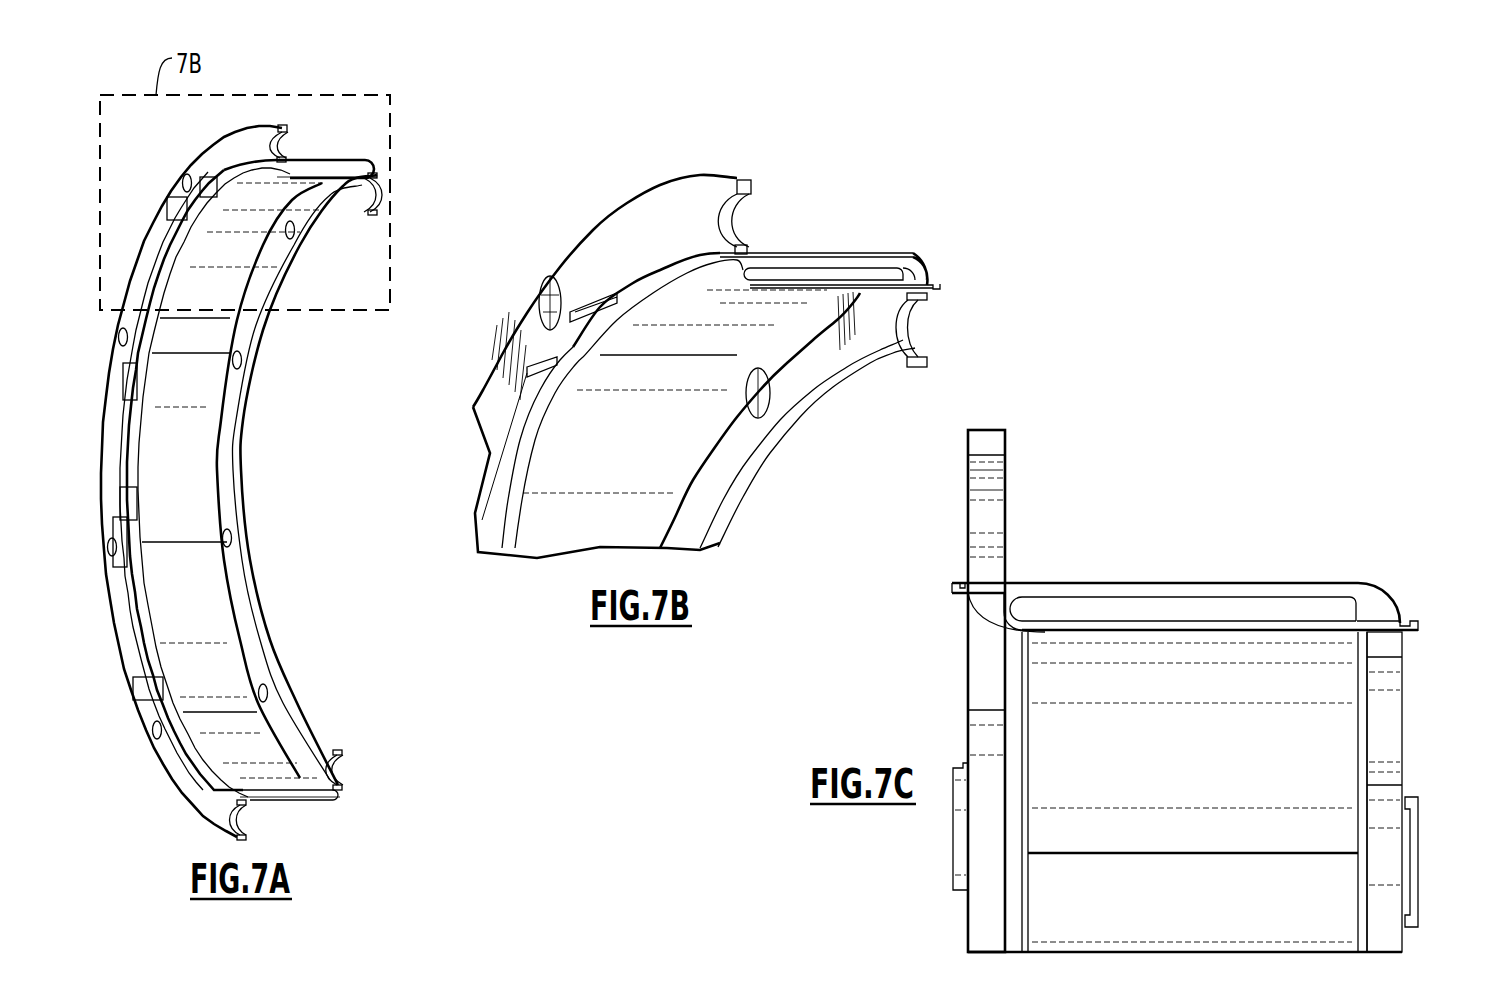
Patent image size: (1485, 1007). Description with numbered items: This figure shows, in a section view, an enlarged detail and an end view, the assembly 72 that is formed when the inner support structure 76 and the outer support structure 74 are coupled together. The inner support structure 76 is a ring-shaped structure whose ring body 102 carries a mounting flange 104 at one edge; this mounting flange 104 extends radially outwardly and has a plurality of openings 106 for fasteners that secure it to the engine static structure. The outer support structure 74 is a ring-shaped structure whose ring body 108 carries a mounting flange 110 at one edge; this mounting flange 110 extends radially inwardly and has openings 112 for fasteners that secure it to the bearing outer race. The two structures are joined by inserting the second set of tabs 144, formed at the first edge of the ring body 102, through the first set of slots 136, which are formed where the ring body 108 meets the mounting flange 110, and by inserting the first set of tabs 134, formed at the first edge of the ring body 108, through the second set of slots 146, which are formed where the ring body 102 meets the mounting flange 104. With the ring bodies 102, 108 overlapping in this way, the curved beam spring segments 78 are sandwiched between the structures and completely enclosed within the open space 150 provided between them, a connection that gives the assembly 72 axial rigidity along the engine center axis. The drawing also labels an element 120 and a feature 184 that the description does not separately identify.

In FIG. 7A, the assembly 72 is at (320, 416).
In FIG. 7B, the assembly 72 is at (880, 130).
In FIG. 7C, the assembly 72 is at (1205, 478).
In FIG. 7A, the outer support structure 74 is at (305, 271).
In FIG. 7C, the outer support structure 74 is at (1358, 570).
In FIG. 7A, the inner support structure 76 is at (290, 112).
In FIG. 7C, the inner support structure 76 is at (1000, 630).
In FIG. 7A, the curved beam spring segments 78 is at (332, 172).
In FIG. 7B, the curved beam spring segments 78 is at (858, 262).
In FIG. 7C, the curved beam spring segments 78 is at (1198, 598).
In FIG. 7A, the ring body 102 is at (255, 737).
In FIG. 7C, the ring body 102 is at (1040, 645).
In FIG. 7A, the mounting flange 104 is at (245, 142).
In FIG. 7B, the mounting flange 104 is at (612, 232).
In FIG. 7C, the mounting flange 104 is at (985, 438).
In FIG. 7A, the openings 106 is at (186, 186).
In FIG. 7B, the openings 106 is at (552, 288).
In FIG. 7C, the openings 106 is at (993, 463).
In FIG. 7A, the ring body 108 is at (305, 166).
In FIG. 7C, the ring body 108 is at (1257, 596).
In FIG. 7C, the mounting flange 110 is at (1388, 645).
In FIG. 7A, the openings 112 is at (258, 668).
In FIG. 7B, the seal cavity 120 is at (810, 268).
In FIG. 7C, the seal cavity 120 is at (1102, 597).
In FIG. 7C, the first set of tabs 134 is at (957, 582).
In FIG. 7B, the first set of slots 136 is at (920, 262).
In FIG. 7C, the first set of slots 136 is at (1378, 612).
In FIG. 7B, the second set of tabs 144 is at (935, 286).
In FIG. 7C, the second set of tabs 144 is at (1410, 622).
In FIG. 7B, the second set of slots 146 is at (742, 256).
In FIG. 7C, the second set of slots 146 is at (985, 582).
In FIG. 7C, the open space 150 is at (1010, 600).
In FIG. 7B, the latch 184 is at (703, 254).